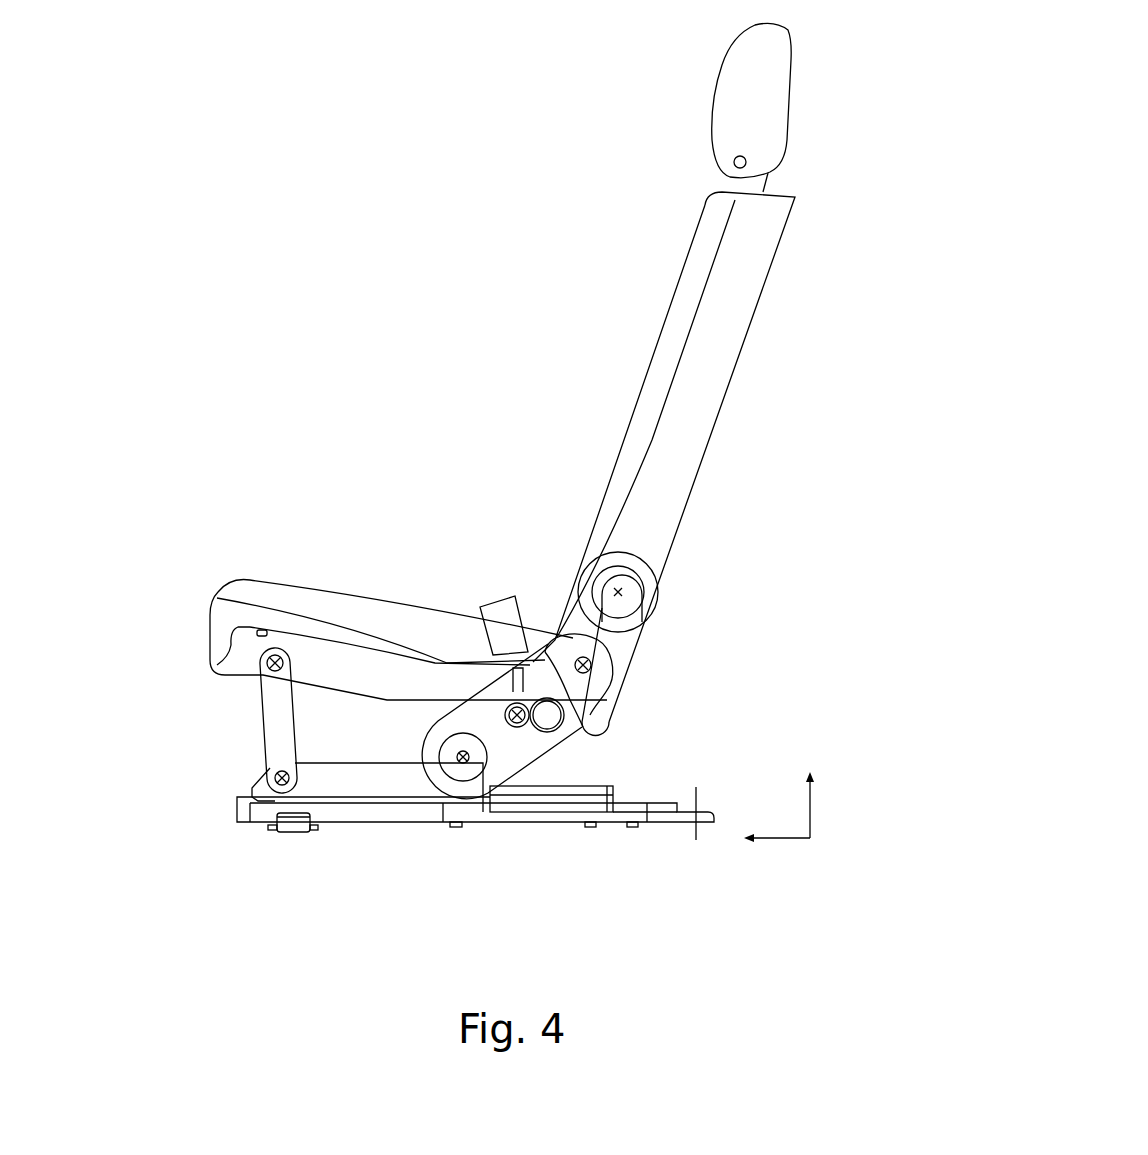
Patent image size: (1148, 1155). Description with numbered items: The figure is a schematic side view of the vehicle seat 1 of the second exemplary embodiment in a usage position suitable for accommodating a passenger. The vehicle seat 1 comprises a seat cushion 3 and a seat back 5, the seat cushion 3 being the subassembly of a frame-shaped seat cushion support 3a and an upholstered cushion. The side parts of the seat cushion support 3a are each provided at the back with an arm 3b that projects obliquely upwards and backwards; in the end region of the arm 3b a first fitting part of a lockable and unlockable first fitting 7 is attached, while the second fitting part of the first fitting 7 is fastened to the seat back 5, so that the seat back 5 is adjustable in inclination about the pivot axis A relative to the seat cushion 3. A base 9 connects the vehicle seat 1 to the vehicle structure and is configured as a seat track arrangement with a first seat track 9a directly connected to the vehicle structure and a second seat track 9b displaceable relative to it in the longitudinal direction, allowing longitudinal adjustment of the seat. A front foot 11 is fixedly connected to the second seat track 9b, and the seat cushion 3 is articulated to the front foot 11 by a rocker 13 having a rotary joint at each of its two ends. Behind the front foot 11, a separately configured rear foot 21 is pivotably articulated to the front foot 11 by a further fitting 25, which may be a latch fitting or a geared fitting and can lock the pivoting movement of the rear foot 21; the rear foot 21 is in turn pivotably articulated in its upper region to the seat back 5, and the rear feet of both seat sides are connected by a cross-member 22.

The vehicle seat 1 is at (378, 208).
The seat cushion 3 is at (272, 594).
The seat cushion support 3a is at (333, 650).
The arm 3b is at (627, 637).
The seat back 5 is at (670, 343).
The first fitting 7 is at (627, 593).
The base 9 is at (207, 822).
The first seat track 9a is at (248, 815).
The second seat track 9b is at (253, 800).
The front foot 11 is at (403, 780).
The rocker 13 is at (277, 722).
The rear foot 21 is at (565, 735).
The cross-member 22 is at (563, 705).
The further fitting 25 is at (467, 767).